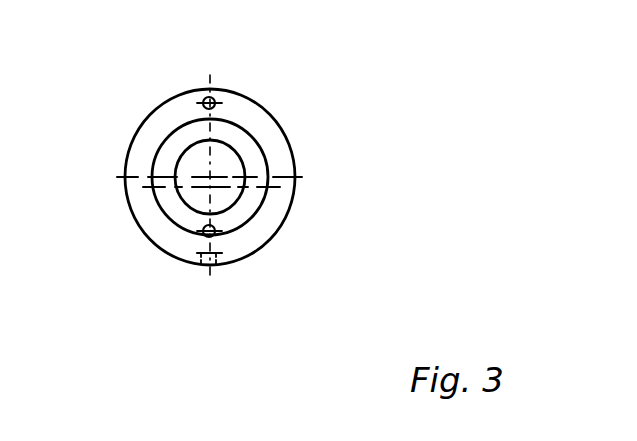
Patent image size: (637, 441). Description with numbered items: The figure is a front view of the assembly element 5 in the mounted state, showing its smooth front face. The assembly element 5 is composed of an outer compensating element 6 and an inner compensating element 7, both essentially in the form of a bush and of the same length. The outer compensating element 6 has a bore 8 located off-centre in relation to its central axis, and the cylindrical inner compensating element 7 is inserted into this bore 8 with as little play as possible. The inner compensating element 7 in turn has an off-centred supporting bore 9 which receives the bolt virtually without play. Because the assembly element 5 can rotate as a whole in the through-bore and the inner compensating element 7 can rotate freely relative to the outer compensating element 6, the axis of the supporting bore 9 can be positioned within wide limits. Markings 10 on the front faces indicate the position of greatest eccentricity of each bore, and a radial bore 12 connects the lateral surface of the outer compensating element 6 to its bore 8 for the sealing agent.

The assembly element 5 is at (364, 85).
The outer compensating element 6 is at (282, 203).
The inner compensating element 7 is at (178, 218).
The bore 8 is at (260, 230).
The supporting bore 9 is at (187, 169).
The markings 10 is at (212, 100).
The radial bore 12 is at (210, 265).